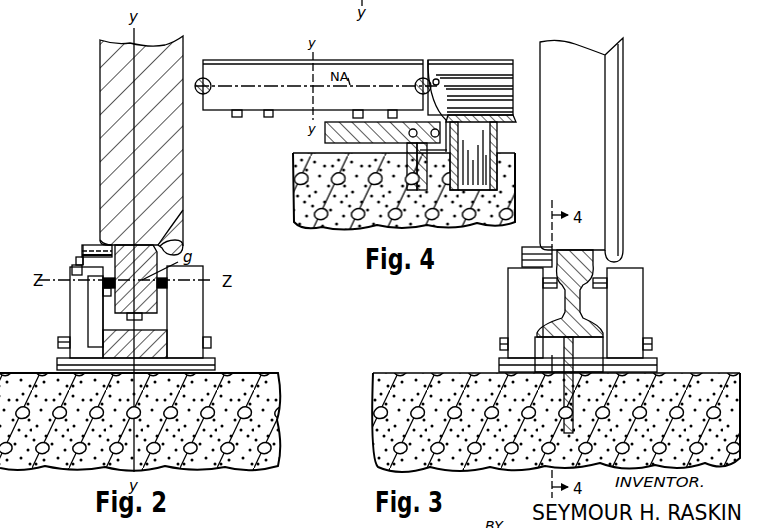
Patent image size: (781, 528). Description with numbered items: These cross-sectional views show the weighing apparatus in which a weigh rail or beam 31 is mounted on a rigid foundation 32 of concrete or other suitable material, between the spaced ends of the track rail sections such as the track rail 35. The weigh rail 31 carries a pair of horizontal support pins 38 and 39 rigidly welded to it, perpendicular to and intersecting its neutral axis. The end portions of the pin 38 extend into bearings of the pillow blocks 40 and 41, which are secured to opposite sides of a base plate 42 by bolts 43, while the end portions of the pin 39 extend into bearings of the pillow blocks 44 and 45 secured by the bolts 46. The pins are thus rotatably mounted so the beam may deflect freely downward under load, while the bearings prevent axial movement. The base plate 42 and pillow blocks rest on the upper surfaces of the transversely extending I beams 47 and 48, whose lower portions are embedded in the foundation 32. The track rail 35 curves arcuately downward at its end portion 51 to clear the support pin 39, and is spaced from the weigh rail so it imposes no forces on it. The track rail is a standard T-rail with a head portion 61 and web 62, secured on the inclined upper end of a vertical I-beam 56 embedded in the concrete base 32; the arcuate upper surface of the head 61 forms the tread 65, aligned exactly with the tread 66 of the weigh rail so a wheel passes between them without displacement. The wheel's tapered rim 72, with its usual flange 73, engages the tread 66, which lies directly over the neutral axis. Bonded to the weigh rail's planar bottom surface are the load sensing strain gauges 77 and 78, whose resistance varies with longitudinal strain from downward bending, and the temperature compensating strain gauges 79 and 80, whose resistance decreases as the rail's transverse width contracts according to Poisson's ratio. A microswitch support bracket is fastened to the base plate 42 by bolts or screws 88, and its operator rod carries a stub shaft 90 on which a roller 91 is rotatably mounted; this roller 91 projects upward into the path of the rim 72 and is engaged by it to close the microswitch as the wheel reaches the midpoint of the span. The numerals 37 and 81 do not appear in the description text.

In FIG. 2, the weigh rail 31 is at (157, 298).
In FIG. 4, the weigh rail 31 is at (343, 68).
In FIG. 2, the foundation 32 is at (38, 470).
In FIG. 4, the foundation 32 is at (331, 224).
In FIG. 3, the foundation 32 is at (390, 437).
In FIG. 4, the track rail section 35 is at (476, 66).
In FIG. 3, the track rail section 35 is at (585, 306).
In FIG. 2, the bolt 37 is at (103, 291).
In FIG. 2, the support pin 38 is at (167, 283).
In FIG. 4, the support pin 38 is at (205, 78).
In FIG. 4, the support pin 39 is at (418, 72).
In FIG. 3, the support pin 39 is at (603, 285).
In FIG. 2, the pillow block 40 is at (76, 298).
In FIG. 2, the pillow block 41 is at (203, 320).
In FIG. 2, the base plate 42 is at (150, 342).
In FIG. 4, the base plate 42 is at (326, 134).
In FIG. 2, the bolts 43 is at (211, 345).
In FIG. 3, the pillow block 44 is at (518, 336).
In FIG. 3, the pillow block 45 is at (641, 322).
In FIG. 3, the bolts 46 is at (654, 346).
In FIG. 2, the transversely extending I beam 47 is at (215, 366).
In FIG. 3, the transversely extending I beam 48 is at (500, 367).
In FIG. 4, the arcuately curved end portion 51 is at (434, 78).
In FIG. 3, the vertical I-beam 56 is at (600, 352).
In FIG. 3, the head portion 61 is at (616, 263).
In FIG. 3, the web 62 is at (560, 303).
In FIG. 3, the tread 65 is at (575, 250).
In FIG. 2, the tread 66 is at (175, 220).
In FIG. 2, the rim 72 is at (100, 244).
In FIG. 2, the flange 73 is at (183, 238).
In FIG. 4, the load sensing strain gauge 77 is at (282, 130).
In FIG. 4, the load sensing strain gauge 78 is at (370, 112).
In FIG. 4, the temperature compensating strain gauge 79 is at (232, 116).
In FIG. 4, the temperature compensating strain gauge 80 is at (385, 112).
In FIG. 2, the plate 81 is at (95, 330).
In FIG. 2, the bolts or screws 88 is at (82, 252).
In FIG. 2, the stub shaft 90 is at (84, 241).
In FIG. 2, the roller 91 is at (73, 270).